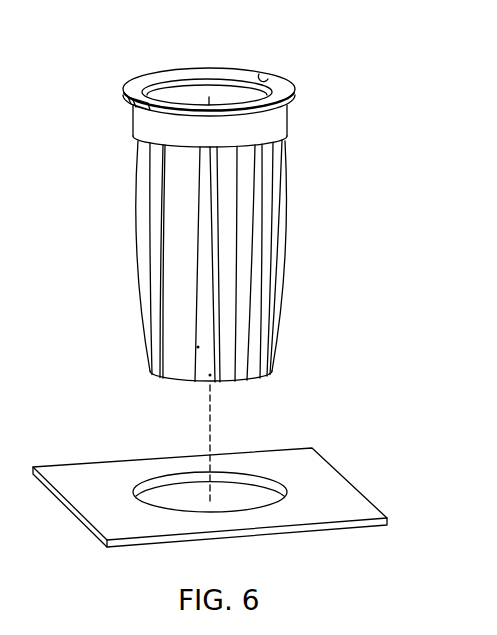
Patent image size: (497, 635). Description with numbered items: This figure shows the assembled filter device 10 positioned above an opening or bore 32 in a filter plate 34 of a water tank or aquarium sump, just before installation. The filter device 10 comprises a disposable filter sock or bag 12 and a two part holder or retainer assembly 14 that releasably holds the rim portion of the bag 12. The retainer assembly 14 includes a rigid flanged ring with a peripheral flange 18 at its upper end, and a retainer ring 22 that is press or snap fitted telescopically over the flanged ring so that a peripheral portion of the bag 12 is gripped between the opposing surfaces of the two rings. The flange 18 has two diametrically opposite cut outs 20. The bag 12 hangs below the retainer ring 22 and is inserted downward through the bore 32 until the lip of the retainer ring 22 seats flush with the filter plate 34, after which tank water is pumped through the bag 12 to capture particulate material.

The filter device 10 is at (101, 207).
The filter sock or bag 12 is at (292, 207).
The holder or retainer assembly 14 is at (214, 60).
The peripheral flange 18 is at (135, 88).
The cut outs 20 is at (271, 79).
The retainer ring 22 is at (268, 128).
The opening or bore 32 is at (227, 477).
The filter plate 34 is at (324, 484).